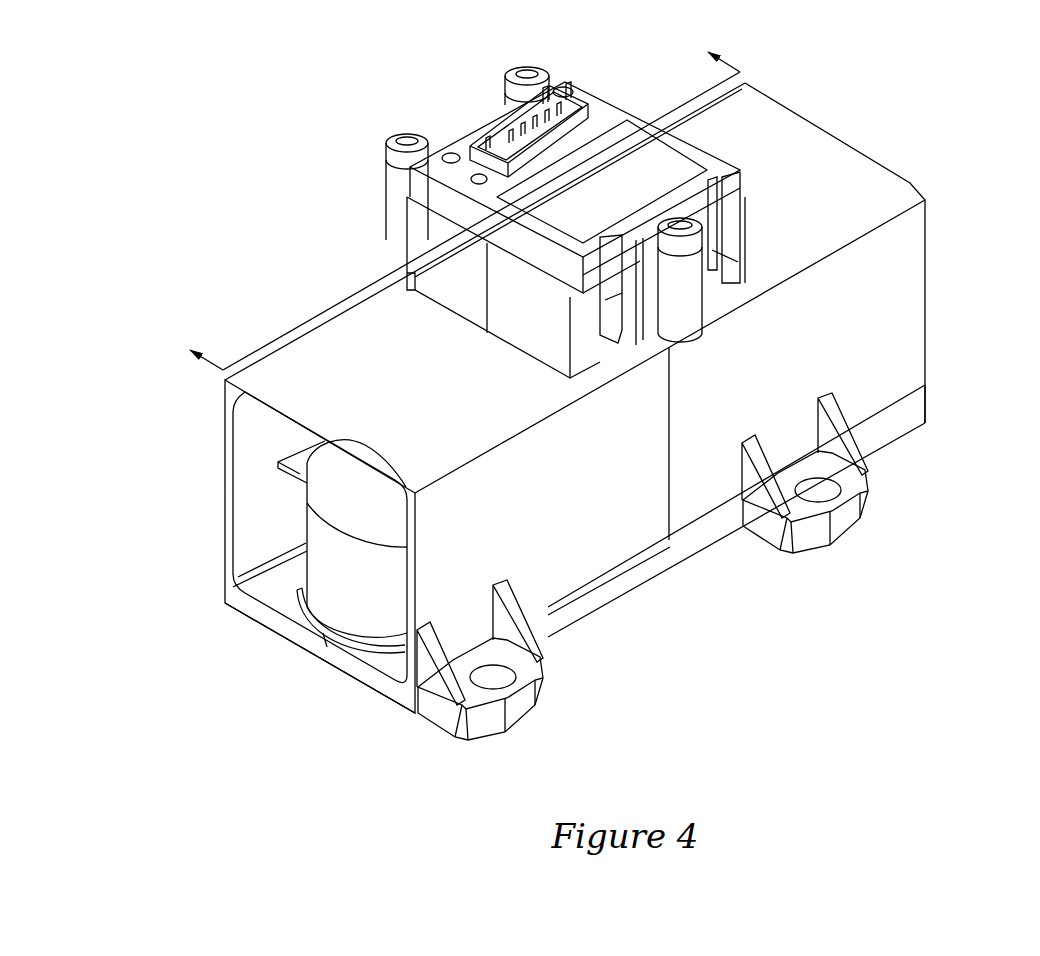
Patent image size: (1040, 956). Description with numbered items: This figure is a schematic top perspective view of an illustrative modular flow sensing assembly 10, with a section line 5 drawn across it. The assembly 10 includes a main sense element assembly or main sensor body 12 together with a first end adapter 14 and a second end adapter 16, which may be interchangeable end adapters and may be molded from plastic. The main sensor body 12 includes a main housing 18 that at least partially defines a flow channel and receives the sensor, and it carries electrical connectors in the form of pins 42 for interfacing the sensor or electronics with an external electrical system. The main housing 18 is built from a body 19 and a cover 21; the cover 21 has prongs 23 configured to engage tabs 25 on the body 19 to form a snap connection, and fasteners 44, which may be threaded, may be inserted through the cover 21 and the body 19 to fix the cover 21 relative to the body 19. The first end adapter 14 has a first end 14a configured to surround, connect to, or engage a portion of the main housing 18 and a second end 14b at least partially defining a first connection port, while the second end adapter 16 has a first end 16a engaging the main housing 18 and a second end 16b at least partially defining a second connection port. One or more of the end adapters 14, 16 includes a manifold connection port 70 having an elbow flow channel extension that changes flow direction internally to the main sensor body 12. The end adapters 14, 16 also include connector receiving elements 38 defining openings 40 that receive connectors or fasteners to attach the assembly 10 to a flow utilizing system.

The section line 5- 5 is at (454, 199).
The modular flow sensing assembly 10 is at (245, 140).
The main sense element assembly 12 is at (595, 82).
The first end adapter 14 is at (640, 555).
The first end 14a is at (660, 520).
The second end 14b is at (357, 703).
The second end adapter 16 is at (905, 270).
The first end 16a is at (680, 418).
The second end 16b is at (930, 440).
The main housing 18 is at (417, 233).
The body 19 is at (748, 215).
The cover 21 is at (683, 163).
The prongs 23 is at (733, 246).
The tabs 25 is at (715, 270).
The connector receiving elements 38 is at (855, 525).
The openings 40 is at (830, 485).
The pins 42 is at (505, 138).
The fasteners 44 is at (527, 76).
The manifold connection port 70 is at (728, 540).